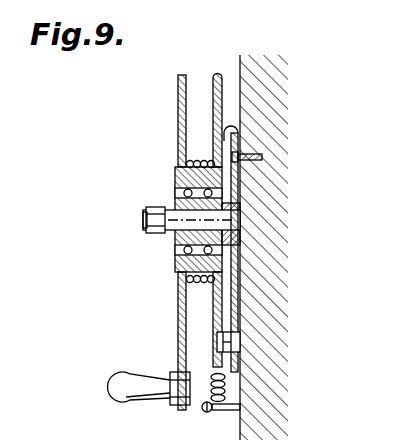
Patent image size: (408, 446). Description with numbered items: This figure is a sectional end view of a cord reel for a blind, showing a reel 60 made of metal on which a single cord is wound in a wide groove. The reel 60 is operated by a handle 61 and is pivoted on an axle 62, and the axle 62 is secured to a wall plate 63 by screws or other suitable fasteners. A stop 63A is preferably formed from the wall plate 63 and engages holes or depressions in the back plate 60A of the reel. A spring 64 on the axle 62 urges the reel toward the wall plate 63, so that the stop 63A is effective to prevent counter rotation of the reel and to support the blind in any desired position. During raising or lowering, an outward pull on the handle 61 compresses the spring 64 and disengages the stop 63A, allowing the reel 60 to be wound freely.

The reel 60 is at (181, 128).
The back plate 60A is at (219, 101).
The handle 61 is at (122, 375).
The axle 62 is at (158, 222).
The wall plate 63 is at (236, 128).
The stop 63A is at (232, 345).
The spring 64 is at (171, 243).